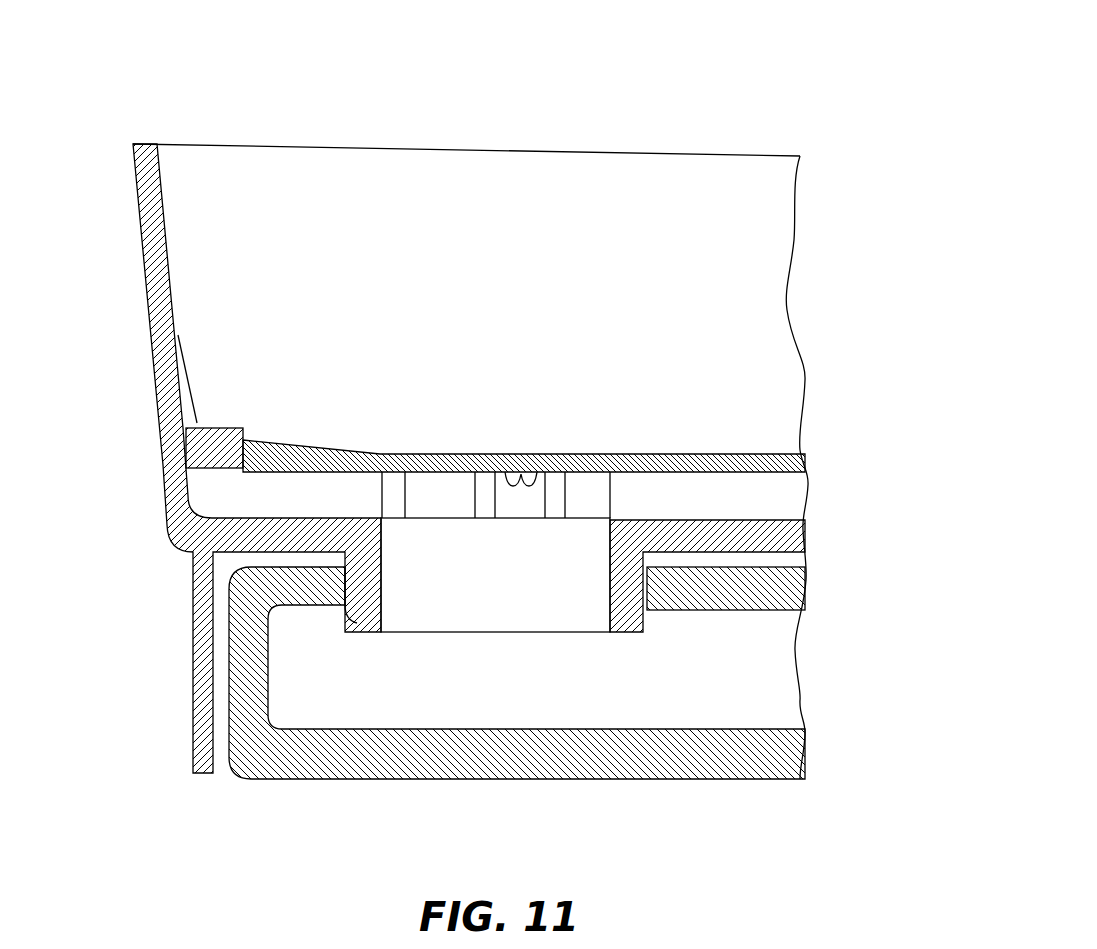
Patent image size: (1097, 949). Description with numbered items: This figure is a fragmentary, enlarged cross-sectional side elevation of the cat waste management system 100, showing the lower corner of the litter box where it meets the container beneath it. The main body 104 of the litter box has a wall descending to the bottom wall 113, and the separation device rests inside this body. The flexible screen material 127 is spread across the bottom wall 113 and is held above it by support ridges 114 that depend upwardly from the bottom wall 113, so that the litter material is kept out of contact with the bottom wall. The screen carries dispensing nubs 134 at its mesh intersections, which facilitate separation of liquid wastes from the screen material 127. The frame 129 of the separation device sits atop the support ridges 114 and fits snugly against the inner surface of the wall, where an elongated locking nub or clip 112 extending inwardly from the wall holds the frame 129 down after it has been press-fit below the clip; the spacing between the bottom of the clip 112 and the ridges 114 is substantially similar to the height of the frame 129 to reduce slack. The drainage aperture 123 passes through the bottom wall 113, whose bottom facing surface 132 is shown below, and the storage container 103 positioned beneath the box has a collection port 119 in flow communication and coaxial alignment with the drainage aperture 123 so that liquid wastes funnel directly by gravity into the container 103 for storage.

The cat waste management system 100 is at (625, 106).
The storage container 103 is at (515, 779).
The main body 104 is at (148, 332).
The locking nubs or clips 112 is at (188, 386).
The bottom wall 113 is at (787, 541).
The support ridges 114 is at (393, 488).
The collection port 119 is at (357, 623).
The drainage aperture 123 is at (514, 601).
The screen material 127 is at (672, 454).
The frame 129 is at (235, 428).
The bottom facing surface 132 is at (733, 552).
The dispensing nubs 134 is at (521, 474).